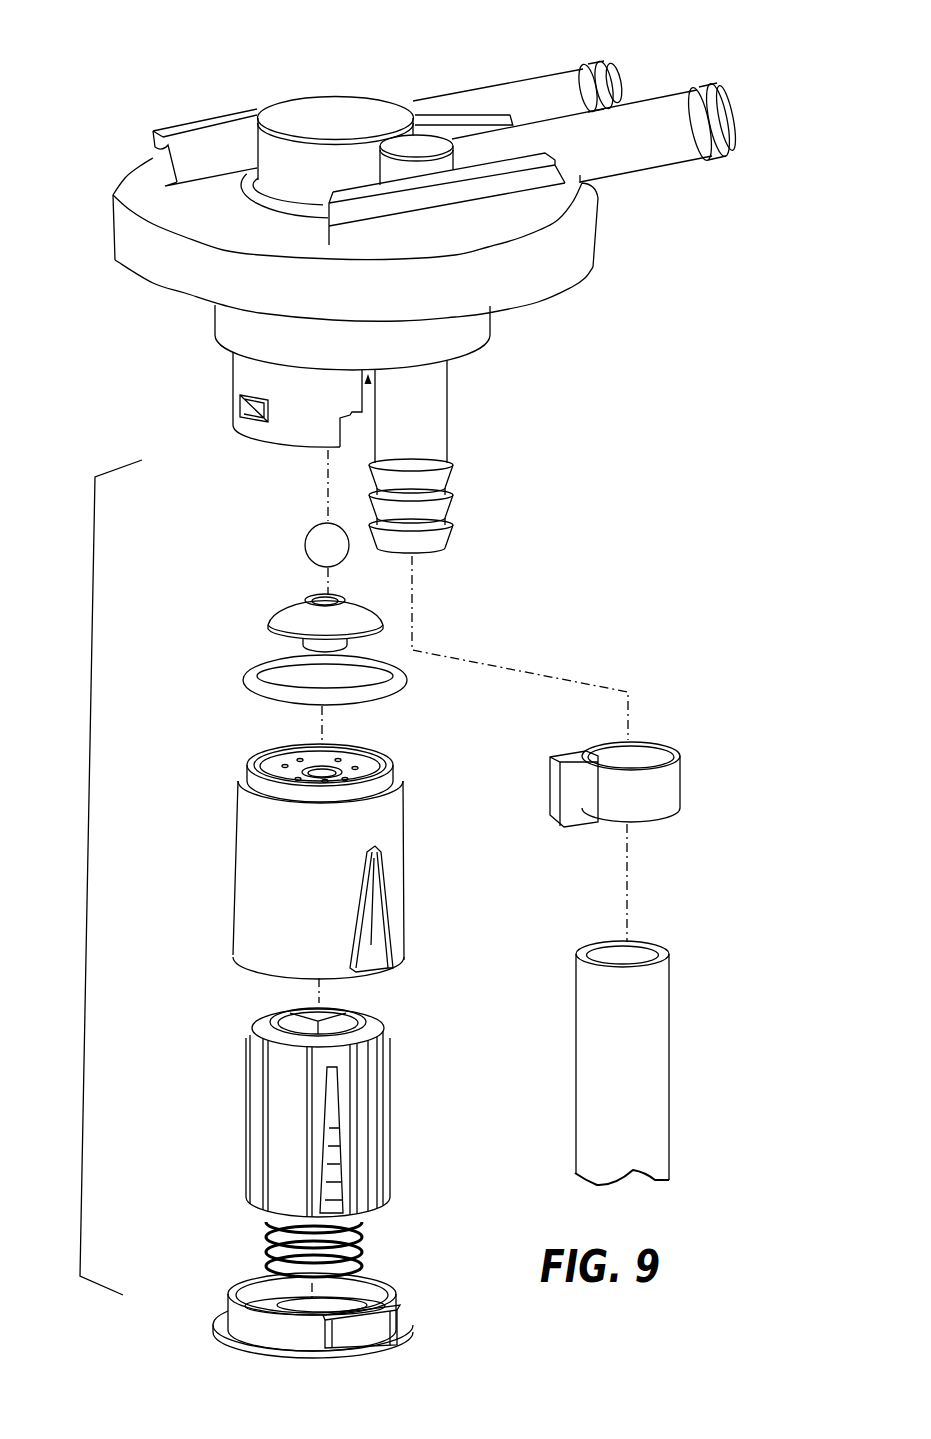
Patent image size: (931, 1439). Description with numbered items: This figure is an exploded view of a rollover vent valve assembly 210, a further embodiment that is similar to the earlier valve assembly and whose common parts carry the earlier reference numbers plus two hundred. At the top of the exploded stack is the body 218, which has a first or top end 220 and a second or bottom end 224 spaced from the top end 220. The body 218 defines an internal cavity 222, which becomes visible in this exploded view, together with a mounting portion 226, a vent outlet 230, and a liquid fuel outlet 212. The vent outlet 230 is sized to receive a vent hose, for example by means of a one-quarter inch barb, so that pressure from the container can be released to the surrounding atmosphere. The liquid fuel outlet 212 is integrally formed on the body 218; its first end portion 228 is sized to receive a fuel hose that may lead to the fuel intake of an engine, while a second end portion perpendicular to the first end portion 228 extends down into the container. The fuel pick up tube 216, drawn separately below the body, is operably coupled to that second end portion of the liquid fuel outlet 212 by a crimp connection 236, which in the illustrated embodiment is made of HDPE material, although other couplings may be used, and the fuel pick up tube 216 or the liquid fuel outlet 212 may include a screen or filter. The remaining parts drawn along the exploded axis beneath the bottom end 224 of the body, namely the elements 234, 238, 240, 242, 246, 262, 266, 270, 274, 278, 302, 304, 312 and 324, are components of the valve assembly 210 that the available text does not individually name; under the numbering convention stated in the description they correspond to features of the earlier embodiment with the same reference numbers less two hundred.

The rollover vent valve assembly 210 is at (439, 45).
The liquid fuel outlet 212 is at (613, 158).
The fuel pick up tube 216 is at (662, 998).
The body 218 is at (283, 99).
The top end 220 is at (262, 103).
The internal cavity 222 is at (379, 401).
The bottom end 224 is at (213, 408).
The mounting portion 226 is at (140, 185).
The first end portion 228 is at (731, 135).
The vent outlet 230 is at (590, 97).
The cartridge body 234 is at (393, 865).
The crimp connection 236 is at (669, 792).
The valve body 238 is at (283, 1147).
The nut 240 is at (369, 1322).
The tab 242 is at (408, 1320).
The holes 246 is at (358, 770).
The central opening 262 is at (335, 765).
The rim 266 is at (285, 748).
The dome cap 270 is at (363, 613).
The lip 274 is at (240, 770).
The o-ring 278 is at (247, 678).
The ball 302 is at (310, 547).
The top disc 304 is at (300, 1007).
The spring 312 is at (357, 1250).
The bracket 324 is at (87, 880).